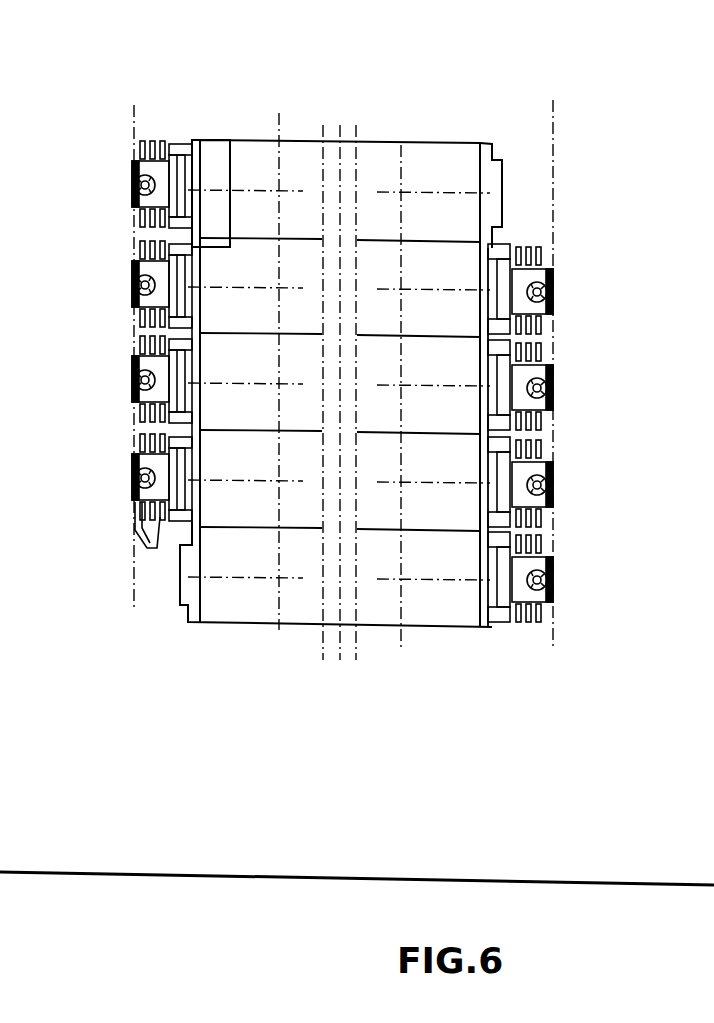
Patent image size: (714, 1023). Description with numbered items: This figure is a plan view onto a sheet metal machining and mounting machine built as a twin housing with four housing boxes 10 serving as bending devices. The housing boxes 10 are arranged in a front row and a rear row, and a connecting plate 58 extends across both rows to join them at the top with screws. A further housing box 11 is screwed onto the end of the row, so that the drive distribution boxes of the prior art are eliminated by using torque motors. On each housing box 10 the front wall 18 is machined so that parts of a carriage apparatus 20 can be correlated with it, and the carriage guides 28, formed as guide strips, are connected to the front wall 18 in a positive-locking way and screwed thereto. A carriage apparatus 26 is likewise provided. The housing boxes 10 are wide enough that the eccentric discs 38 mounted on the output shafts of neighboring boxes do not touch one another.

The housing box 10 is at (460, 378).
The housing box 11 is at (452, 191).
The front wall 18 is at (190, 294).
The carriage apparatus 20 is at (556, 482).
The carriage apparatus 26 is at (172, 138).
The carriage guides 28 is at (134, 203).
The eccentric discs 38 is at (134, 414).
The connecting plate 58 is at (432, 603).